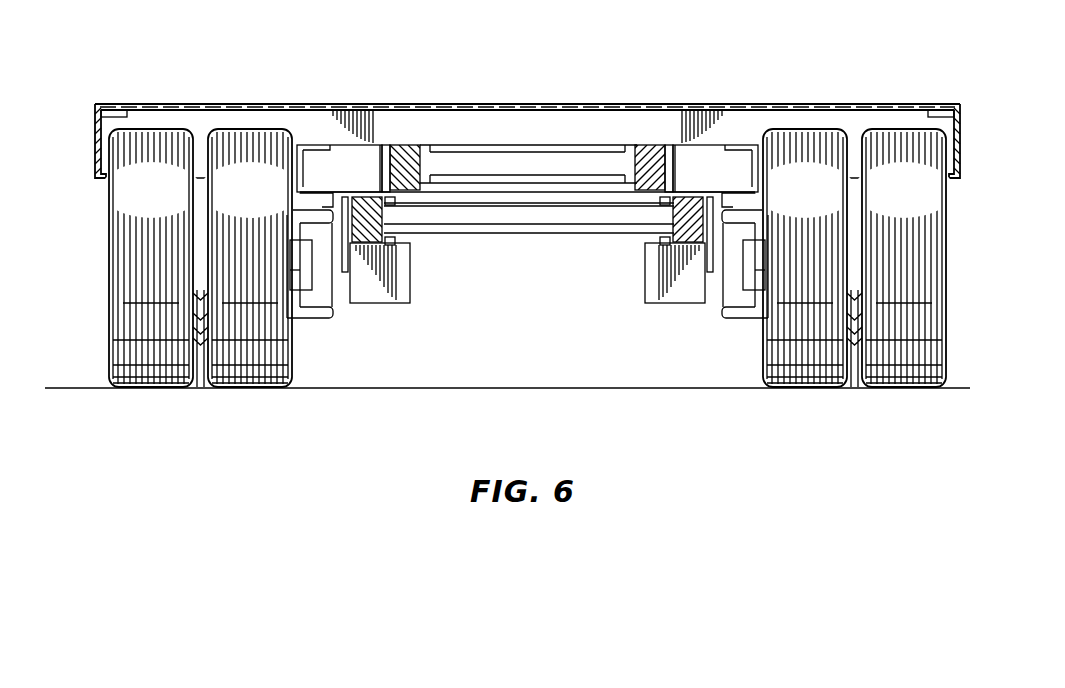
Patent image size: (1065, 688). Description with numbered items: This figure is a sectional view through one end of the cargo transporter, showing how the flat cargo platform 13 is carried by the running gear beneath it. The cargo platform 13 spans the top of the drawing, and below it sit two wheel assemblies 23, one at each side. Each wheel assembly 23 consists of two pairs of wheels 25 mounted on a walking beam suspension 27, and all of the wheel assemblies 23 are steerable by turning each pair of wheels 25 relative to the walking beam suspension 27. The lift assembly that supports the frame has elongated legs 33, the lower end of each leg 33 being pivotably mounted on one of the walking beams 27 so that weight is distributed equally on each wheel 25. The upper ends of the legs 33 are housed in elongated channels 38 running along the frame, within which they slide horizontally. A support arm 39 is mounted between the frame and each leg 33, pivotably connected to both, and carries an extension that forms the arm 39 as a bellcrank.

The cargo platform 13 is at (415, 108).
The wheel assembly 23 is at (92, 311).
The wheels 25 is at (118, 232).
The walking beam suspension 27 is at (369, 298).
The elongated legs 33 is at (367, 200).
The elongated channels 38 is at (310, 145).
The support arm 39 is at (413, 145).